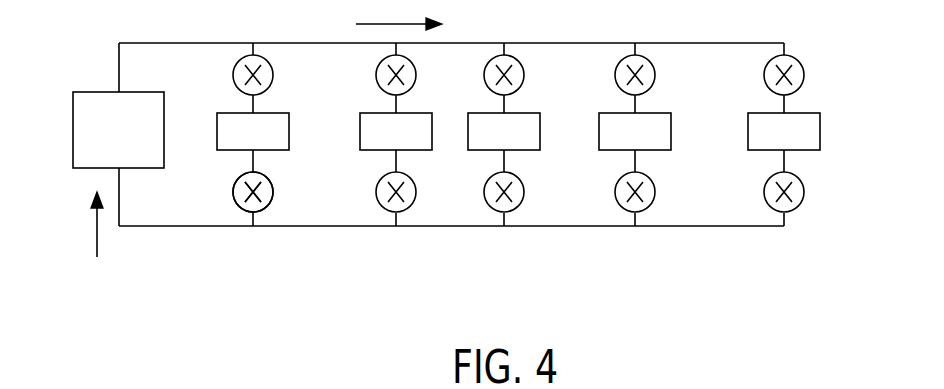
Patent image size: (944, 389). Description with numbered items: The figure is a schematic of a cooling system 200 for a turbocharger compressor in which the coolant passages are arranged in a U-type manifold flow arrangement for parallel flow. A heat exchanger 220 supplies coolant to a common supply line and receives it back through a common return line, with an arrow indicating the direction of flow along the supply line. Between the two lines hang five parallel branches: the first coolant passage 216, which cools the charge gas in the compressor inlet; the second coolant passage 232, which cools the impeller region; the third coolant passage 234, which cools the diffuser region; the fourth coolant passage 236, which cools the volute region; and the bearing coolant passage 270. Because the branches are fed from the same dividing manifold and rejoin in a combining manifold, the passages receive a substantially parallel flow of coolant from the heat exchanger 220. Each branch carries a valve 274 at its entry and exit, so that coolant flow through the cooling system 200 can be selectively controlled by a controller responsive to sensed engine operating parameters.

The cooling system 200 is at (178, 255).
The heat exchanger 220 is at (97, 105).
The first coolant passage 216 is at (278, 128).
The second coolant passage 232 is at (418, 128).
The third coolant passage 234 is at (527, 128).
The fourth coolant passage 236 is at (656, 128).
The bearing coolant passage 270 is at (804, 128).
The valve 274 is at (273, 192).